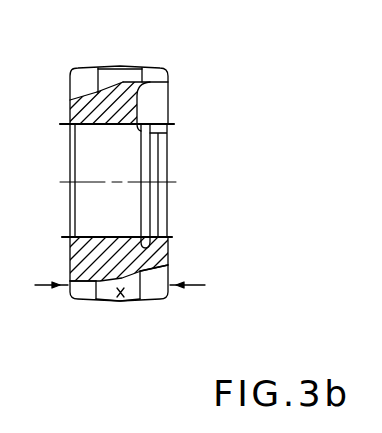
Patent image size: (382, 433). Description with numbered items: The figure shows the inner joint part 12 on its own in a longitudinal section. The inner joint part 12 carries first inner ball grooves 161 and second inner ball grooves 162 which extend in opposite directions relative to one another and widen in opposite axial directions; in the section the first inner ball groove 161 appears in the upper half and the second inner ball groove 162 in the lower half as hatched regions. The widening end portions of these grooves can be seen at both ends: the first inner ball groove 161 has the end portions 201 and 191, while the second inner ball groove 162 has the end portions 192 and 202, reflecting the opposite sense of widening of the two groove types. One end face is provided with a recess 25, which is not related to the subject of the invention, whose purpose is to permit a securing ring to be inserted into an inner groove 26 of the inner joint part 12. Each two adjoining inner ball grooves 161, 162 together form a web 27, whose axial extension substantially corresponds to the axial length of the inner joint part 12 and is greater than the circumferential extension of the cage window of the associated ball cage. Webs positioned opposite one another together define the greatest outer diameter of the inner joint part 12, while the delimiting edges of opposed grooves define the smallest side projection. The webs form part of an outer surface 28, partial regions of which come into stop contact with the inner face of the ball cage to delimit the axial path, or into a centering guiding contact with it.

The inner joint part 12 is at (207, 54).
The widening end portion of first inner ball groove 201 is at (84, 72).
The web 27 is at (108, 63).
The first inner ball groove 161 is at (126, 70).
The widening end portion of first inner ball groove 191 is at (162, 67).
The recess 25 is at (162, 107).
The inner groove 26 is at (151, 239).
The widening end portion of second inner ball groove 192 is at (90, 291).
The second inner ball groove 162 is at (128, 296).
The widening end portion of second inner ball groove 202 is at (162, 295).
The outer surface 28 is at (118, 320).